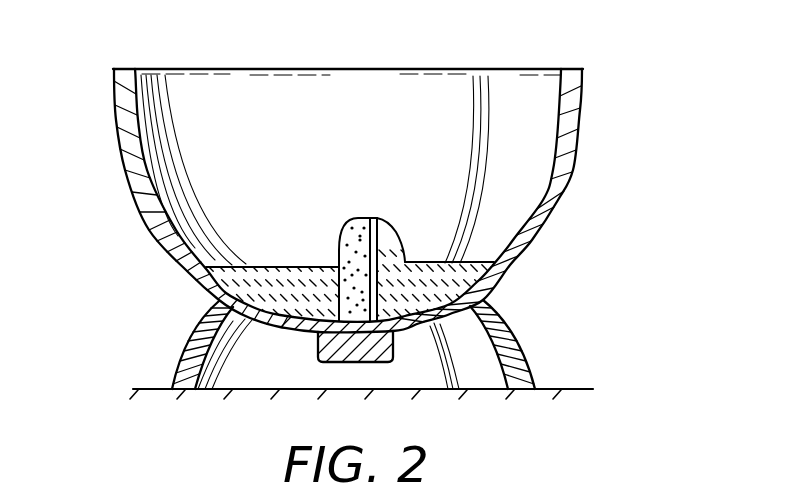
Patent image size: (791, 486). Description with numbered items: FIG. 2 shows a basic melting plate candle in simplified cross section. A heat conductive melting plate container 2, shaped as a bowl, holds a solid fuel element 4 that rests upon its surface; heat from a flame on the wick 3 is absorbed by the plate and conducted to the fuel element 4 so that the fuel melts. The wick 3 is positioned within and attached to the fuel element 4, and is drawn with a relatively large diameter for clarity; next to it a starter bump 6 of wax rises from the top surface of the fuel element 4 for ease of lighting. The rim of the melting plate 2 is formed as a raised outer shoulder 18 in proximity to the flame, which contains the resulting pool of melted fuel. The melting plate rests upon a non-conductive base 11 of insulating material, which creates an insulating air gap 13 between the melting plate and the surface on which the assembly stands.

The melting plate container 2 is at (583, 108).
The wick 3 is at (350, 221).
The solid fuel element 4 is at (240, 245).
The starter bump 6 is at (393, 228).
The non-conductive base 11 is at (521, 347).
The insulating air gap 13 is at (462, 338).
The shoulder 18 is at (586, 60).